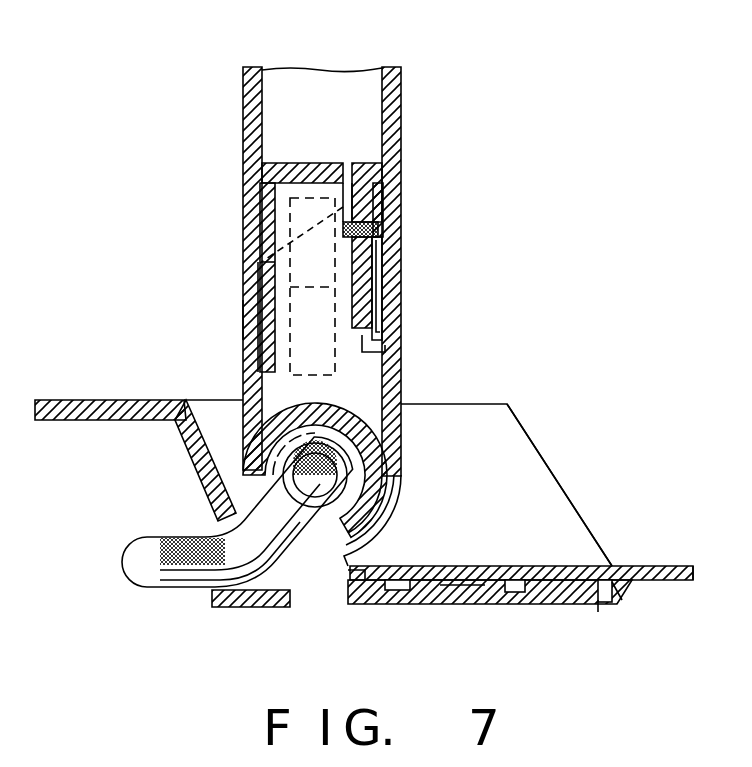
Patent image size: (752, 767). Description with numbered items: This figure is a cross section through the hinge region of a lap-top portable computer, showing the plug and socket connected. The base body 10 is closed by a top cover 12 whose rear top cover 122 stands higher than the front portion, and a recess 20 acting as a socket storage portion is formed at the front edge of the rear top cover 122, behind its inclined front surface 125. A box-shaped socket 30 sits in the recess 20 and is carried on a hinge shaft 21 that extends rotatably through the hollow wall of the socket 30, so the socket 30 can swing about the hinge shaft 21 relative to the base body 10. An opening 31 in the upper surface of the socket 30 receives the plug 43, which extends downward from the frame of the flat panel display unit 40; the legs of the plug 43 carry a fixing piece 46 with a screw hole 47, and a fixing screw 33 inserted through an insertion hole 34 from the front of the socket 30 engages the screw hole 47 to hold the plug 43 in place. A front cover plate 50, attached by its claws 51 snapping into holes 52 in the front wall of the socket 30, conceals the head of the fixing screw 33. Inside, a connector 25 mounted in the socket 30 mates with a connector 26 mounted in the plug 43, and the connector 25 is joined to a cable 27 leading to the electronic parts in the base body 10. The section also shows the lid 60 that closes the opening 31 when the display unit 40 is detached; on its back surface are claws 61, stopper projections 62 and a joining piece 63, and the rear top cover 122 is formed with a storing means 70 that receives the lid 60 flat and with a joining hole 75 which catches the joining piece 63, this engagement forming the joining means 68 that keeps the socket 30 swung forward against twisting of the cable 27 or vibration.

The base body 10 is at (72, 397).
The top cover 12 is at (686, 583).
The recess 20 is at (514, 470).
The hinge shaft 21 is at (313, 475).
The connector 25 is at (298, 313).
The connector 26 is at (264, 202).
The cable 27 is at (200, 568).
The socket 30 is at (256, 275).
The opening 31 is at (280, 246).
The fixing screw 33 is at (348, 218).
The insertion hole 34 is at (385, 216).
The flat panel display unit 40 is at (372, 65).
The plug 43 is at (250, 318).
The fixing piece 46 is at (400, 275).
The screw hole 47 is at (380, 233).
The front cover plate 50 is at (400, 249).
The claw 51 is at (396, 335).
The hole 52 is at (400, 352).
The lid 60 is at (477, 566).
The claw 61 is at (400, 606).
The stopper projection 62 is at (515, 605).
The joining piece 63 is at (604, 606).
The joining means 68 is at (597, 612).
The storing means 70 is at (462, 588).
The joining hole 75 is at (622, 600).
The rear top cover 122 is at (116, 418).
The inclined front surface 125 is at (573, 500).